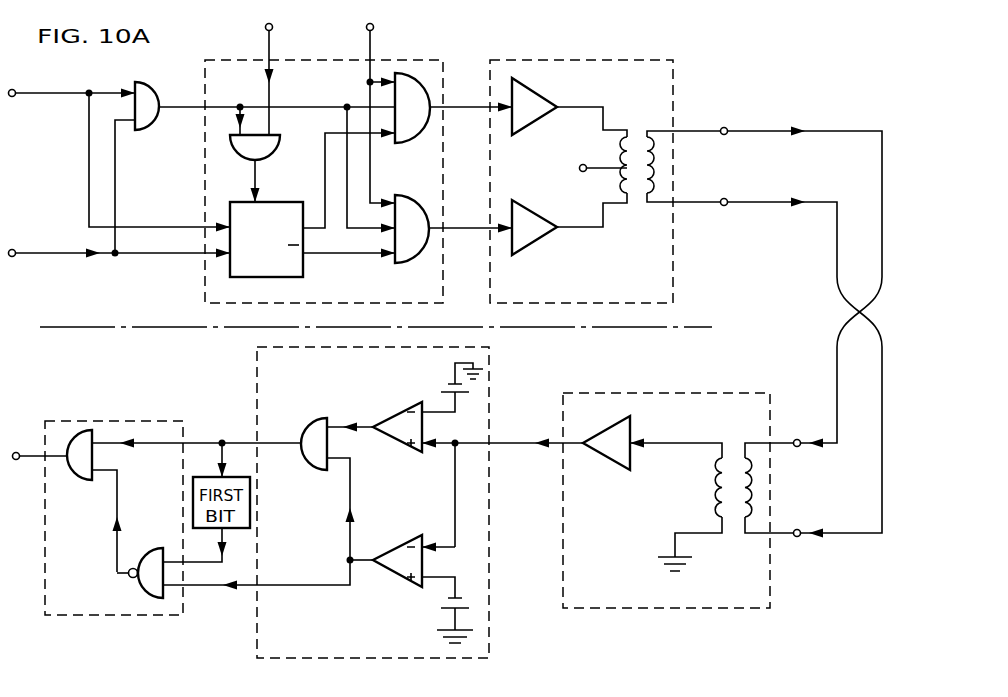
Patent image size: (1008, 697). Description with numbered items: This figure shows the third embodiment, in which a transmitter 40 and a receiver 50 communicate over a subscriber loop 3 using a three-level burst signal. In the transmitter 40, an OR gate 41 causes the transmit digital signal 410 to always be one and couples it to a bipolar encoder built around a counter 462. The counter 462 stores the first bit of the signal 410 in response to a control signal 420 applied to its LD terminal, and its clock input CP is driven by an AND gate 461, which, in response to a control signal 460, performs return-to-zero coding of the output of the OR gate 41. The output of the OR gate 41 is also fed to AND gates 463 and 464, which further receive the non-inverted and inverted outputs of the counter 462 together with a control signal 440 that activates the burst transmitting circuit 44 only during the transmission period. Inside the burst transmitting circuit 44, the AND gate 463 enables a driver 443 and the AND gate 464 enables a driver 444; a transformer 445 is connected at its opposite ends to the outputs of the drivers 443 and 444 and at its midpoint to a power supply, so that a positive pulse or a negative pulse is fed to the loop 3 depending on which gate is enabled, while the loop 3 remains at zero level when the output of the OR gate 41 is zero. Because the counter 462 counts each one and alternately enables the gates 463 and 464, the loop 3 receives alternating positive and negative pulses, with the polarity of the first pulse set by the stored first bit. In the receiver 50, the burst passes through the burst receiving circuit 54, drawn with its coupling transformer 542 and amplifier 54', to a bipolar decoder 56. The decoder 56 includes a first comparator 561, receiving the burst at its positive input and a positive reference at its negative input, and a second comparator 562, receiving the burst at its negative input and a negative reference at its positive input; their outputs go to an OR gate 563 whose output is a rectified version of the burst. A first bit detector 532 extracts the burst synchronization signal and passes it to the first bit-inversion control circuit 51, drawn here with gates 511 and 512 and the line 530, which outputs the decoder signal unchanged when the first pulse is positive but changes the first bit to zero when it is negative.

The subscriber loop 3 is at (868, 311).
The transmitter 40 is at (86, 299).
The OR gate 41 is at (157, 95).
The transmit digital signal 410 is at (44, 98).
The control signal 420 is at (54, 247).
The control signal 440 is at (373, 46).
The control signal 460 is at (272, 46).
The AND gate 461 is at (268, 161).
The counter 462 is at (303, 276).
The AND gate 463 is at (424, 137).
The AND gate 464 is at (420, 261).
The burst transmitting circuit 44 is at (677, 101).
The driver 443 is at (529, 125).
The driver 444 is at (527, 253).
The transformer 445 is at (641, 206).
The receiver 50 is at (85, 369).
The first bit-inversion control circuit 51 is at (139, 625).
The NAND gate 511 is at (148, 543).
The AND gate 512 is at (84, 481).
The signal line 530 is at (209, 563).
The first bit detector 532 is at (200, 476).
The burst receiving circuit 54 is at (686, 500).
The receiver amplifier 54' is at (631, 440).
The transformer 542 is at (737, 527).
The bipolar decoder 56 is at (493, 365).
The first comparator 561 is at (387, 412).
The second comparator 562 is at (390, 547).
The OR gate 563 is at (303, 425).